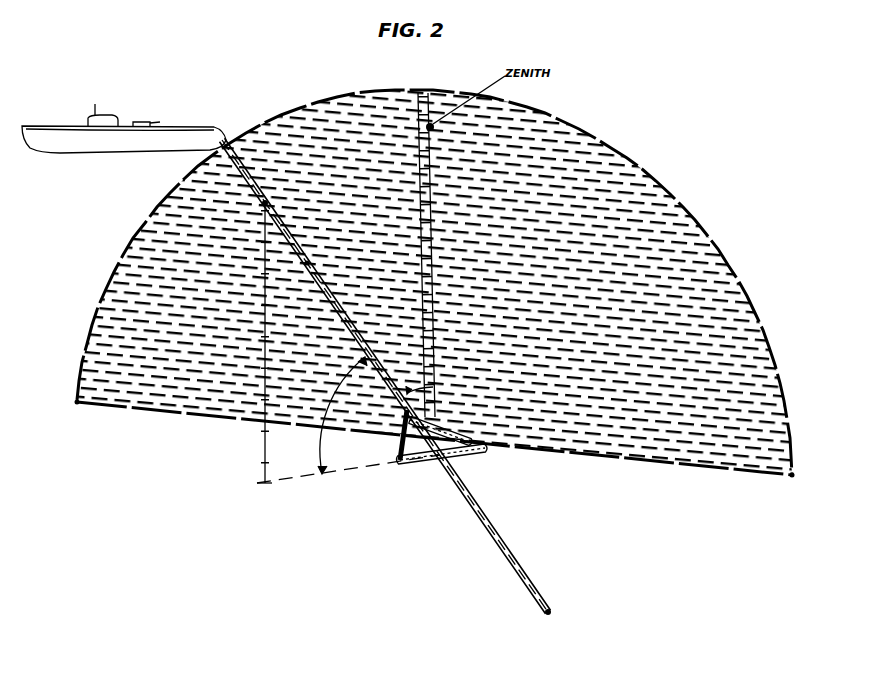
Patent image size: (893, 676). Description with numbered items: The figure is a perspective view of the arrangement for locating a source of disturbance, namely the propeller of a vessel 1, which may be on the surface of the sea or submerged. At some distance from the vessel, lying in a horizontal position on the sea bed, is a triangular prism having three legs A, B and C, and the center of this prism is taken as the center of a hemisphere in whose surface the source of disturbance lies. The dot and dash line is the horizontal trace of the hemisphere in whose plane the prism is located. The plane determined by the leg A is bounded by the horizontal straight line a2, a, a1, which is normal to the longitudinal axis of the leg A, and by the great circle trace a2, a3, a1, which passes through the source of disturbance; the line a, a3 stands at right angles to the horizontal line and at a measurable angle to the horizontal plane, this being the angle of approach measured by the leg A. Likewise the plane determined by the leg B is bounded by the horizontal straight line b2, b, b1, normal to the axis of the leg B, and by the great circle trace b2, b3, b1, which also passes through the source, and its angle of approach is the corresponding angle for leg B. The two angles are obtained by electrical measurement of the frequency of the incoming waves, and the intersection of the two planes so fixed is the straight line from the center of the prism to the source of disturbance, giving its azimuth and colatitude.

The vessel 1 is at (180, 128).
The point on great circle trace a3 is at (421, 92).
The point on horizontal line a is at (398, 437).
The end point of horizontal line a2 is at (75, 402).
The end point of horizontal line a1 is at (793, 478).
The point on horizontal line b is at (432, 468).
The point on great circle trace b3 is at (263, 208).
The end point of horizontal line b2 is at (309, 265).
The end point of horizontal line b1 is at (553, 623).
The leg of triangular prism A is at (402, 443).
The leg of triangular prism B is at (458, 460).
The leg of triangular prism C is at (458, 438).